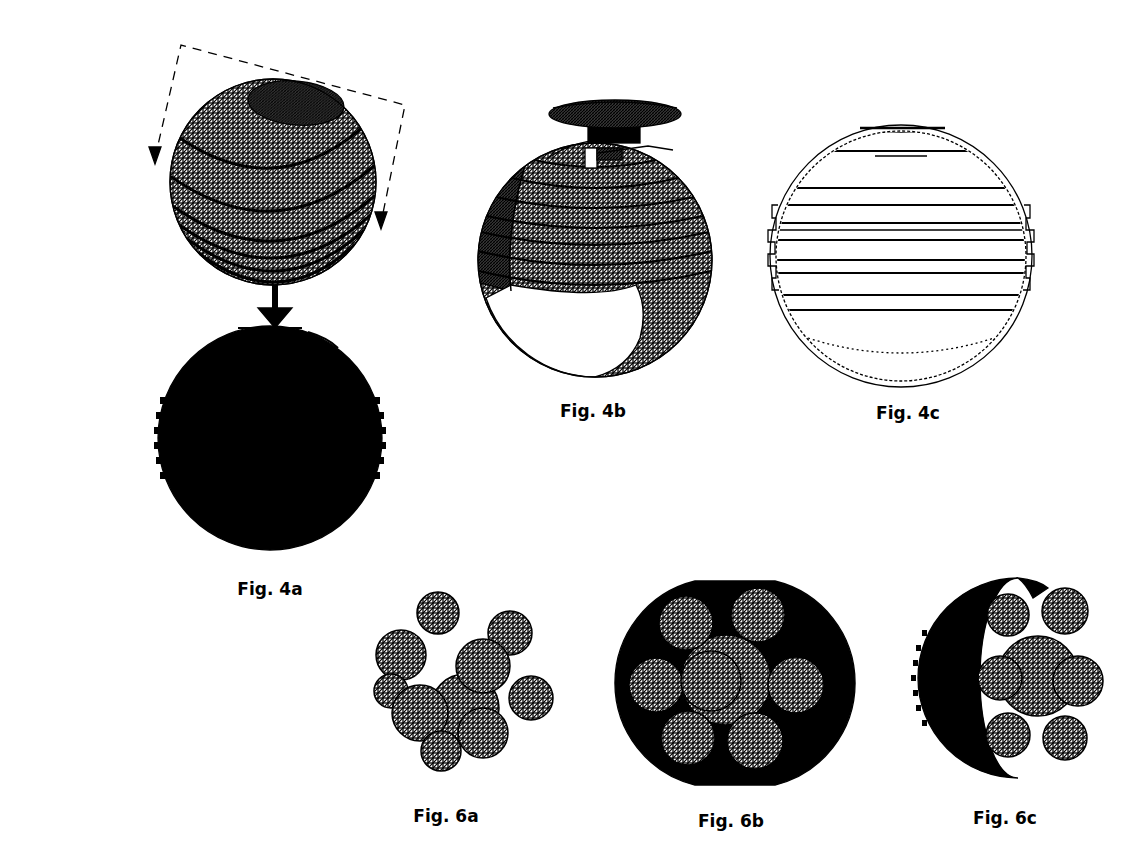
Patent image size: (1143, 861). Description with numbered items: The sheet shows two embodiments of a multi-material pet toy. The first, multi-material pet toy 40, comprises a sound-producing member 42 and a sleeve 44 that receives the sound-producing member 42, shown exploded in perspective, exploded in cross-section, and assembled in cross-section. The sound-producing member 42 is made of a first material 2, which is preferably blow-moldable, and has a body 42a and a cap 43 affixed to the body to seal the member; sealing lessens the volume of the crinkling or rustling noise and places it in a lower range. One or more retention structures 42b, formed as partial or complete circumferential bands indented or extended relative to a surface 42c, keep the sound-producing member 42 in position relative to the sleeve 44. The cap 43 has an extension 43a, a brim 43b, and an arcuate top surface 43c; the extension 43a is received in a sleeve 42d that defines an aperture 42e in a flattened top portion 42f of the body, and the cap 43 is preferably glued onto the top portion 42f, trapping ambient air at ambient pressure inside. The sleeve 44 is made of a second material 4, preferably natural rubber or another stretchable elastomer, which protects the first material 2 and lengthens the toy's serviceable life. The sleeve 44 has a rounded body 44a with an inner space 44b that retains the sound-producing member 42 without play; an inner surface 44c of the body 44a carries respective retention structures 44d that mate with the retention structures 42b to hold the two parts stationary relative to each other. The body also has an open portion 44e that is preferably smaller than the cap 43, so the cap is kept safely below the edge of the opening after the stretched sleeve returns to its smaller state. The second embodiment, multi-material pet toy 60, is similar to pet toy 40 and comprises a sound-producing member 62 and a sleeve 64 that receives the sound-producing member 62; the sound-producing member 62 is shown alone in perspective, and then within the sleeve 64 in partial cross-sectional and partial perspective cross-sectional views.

In FIG. 4B, the first material 2 is at (619, 344).
In FIG. 4C, the first material 2 is at (934, 348).
In FIG. 4A, the second material 4 is at (286, 438).
In FIG. 4A, the multi-material pet toy 40 is at (100, 148).
In FIG. 4A, the sound-producing member 42 is at (241, 175).
In FIG. 4B, the sound-producing member 42 is at (591, 222).
In FIG. 4C, the sound-producing member 42 is at (875, 329).
In FIG. 4A, the body 42a is at (233, 150).
In FIG. 4A, the retention structures 42b is at (232, 197).
In FIG. 4B, the retention structures 42b is at (556, 226).
In FIG. 4C, the retention structures 42b is at (866, 268).
In FIG. 4B, the surface 42c is at (553, 165).
In FIG. 4B, the sleeve 42d is at (627, 163).
In FIG. 4B, the aperture 42e is at (684, 177).
In FIG. 4B, the flattened top portion 42f is at (545, 130).
In FIG. 4C, the flattened top portion 42f is at (956, 125).
In FIG. 4A, the cap 43 is at (321, 94).
In FIG. 4B, the cap 43 is at (612, 100).
In FIG. 4C, the cap 43 is at (895, 121).
In FIG. 4B, the extension 43a is at (662, 132).
In FIG. 4B, the brim 43b is at (583, 100).
In FIG. 4B, the arcuate top surface 43c is at (667, 94).
In FIG. 4A, the sleeve 44 is at (259, 410).
In FIG. 4C, the sleeve 44 is at (924, 229).
In FIG. 4A, the rounded body 44a is at (362, 321).
In FIG. 4A, the inner space 44b is at (233, 307).
In FIG. 4C, the inner surface 44c is at (938, 253).
In FIG. 4C, the retention structures 44d is at (1064, 247).
In FIG. 4A, the open portion 44e is at (327, 304).
In FIG. 4C, the open portion 44e is at (943, 100).
In FIG. 6B, the multi-material pet toy 60 is at (672, 550).
In FIG. 6C, the multi-material pet toy 60 is at (958, 572).
In FIG. 6A, the sound-producing member 62 is at (463, 668).
In FIG. 6B, the sound-producing member 62 is at (718, 669).
In FIG. 6C, the sound-producing member 62 is at (1040, 649).
In FIG. 6B, the sleeve 64 is at (745, 661).
In FIG. 6C, the sleeve 64 is at (953, 678).